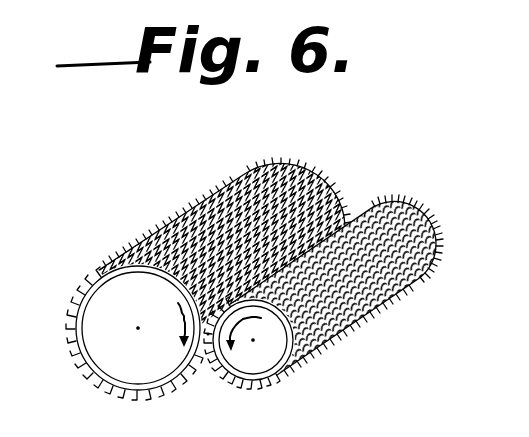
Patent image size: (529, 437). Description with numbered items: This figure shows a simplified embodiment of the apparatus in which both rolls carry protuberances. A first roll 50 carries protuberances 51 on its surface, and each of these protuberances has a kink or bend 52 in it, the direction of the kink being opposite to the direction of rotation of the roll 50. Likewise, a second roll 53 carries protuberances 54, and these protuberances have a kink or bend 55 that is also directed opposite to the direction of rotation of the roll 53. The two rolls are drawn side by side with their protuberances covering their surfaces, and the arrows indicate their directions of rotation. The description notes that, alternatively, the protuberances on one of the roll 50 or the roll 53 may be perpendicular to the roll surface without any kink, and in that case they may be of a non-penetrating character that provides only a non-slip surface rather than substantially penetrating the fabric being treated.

The roll 50 is at (106, 362).
The protuberances 51 is at (113, 266).
The kink or bend 52 is at (143, 240).
The roll 53 is at (276, 372).
The protuberances 54 is at (214, 354).
The kink or bend 55 is at (240, 386).